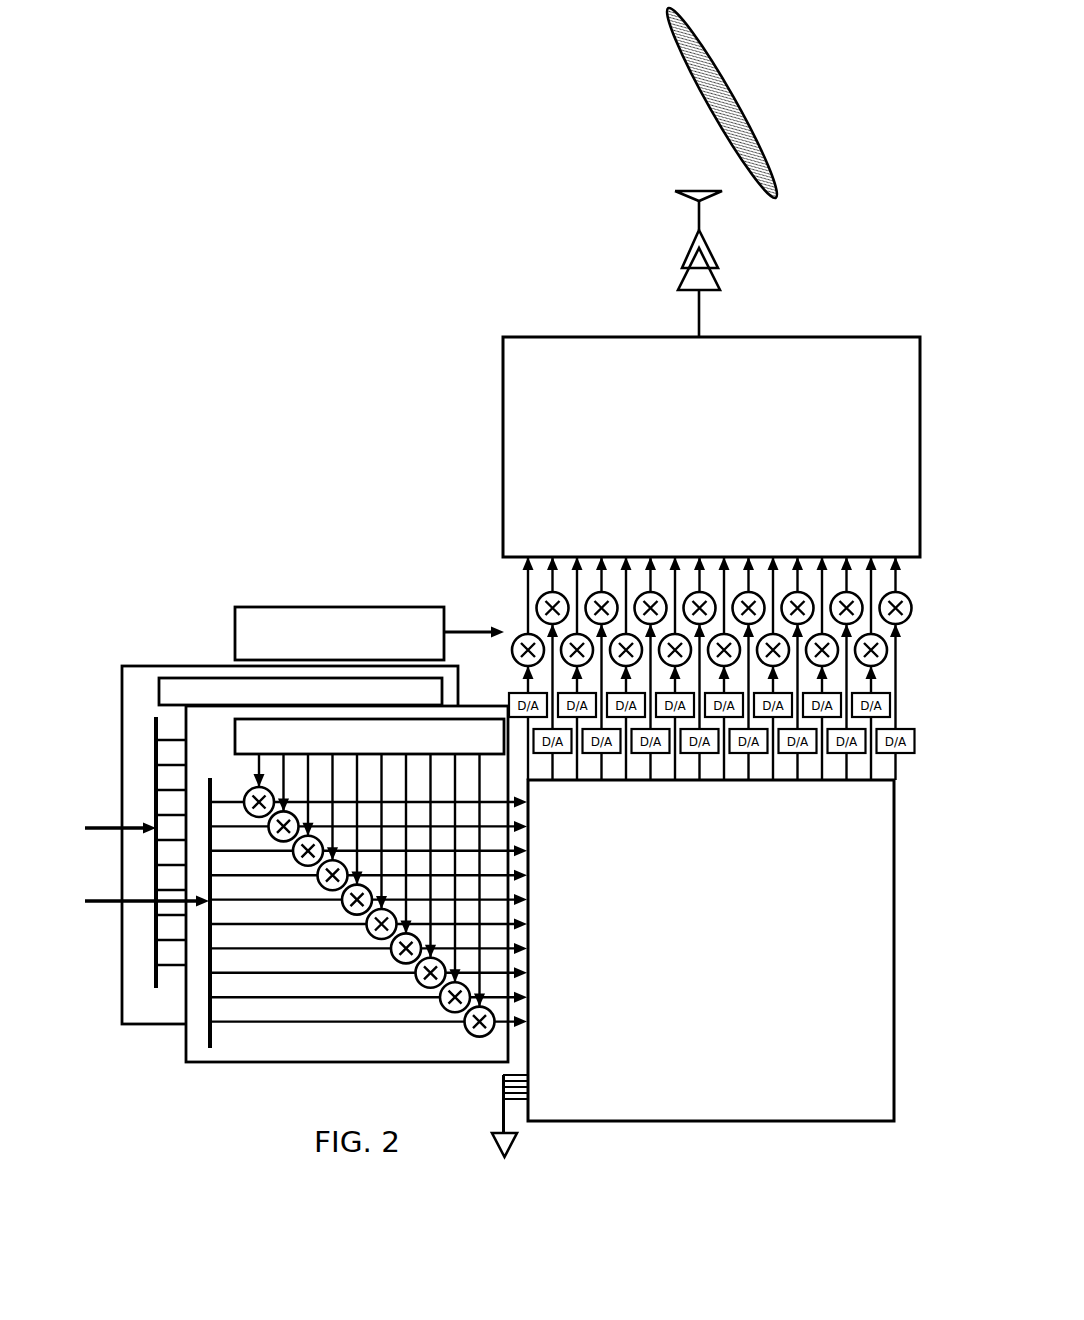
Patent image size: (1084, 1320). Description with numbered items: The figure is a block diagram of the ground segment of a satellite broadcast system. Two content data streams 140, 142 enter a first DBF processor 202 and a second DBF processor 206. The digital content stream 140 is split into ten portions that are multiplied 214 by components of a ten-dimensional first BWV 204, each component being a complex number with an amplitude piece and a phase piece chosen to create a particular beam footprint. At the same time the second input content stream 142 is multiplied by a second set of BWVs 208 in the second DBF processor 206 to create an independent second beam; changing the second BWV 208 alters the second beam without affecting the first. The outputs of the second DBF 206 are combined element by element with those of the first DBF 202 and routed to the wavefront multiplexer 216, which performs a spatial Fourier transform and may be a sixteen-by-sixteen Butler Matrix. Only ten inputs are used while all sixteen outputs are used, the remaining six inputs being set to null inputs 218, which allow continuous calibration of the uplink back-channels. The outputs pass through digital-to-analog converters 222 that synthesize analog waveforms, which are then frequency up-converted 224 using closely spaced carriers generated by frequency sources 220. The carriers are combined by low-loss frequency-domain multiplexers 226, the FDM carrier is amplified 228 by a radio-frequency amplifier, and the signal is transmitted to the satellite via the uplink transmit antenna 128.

The uplink transmit antenna 128 is at (694, 103).
The amplifier 228 is at (662, 264).
The frequency-domain multiplexer 226 is at (711, 447).
The frequency up-converters 224 is at (683, 610).
The digital-to-analog converters 222 is at (688, 699).
The frequency sources 220 is at (369, 596).
The second DBF processor 206 is at (283, 820).
The second set of BWVs 208 is at (300, 692).
The first BWV 204 is at (369, 736).
The first DBF processor 202 is at (320, 908).
The multipliers 214 is at (368, 907).
The wavefront multiplexer 216 is at (711, 950).
The null inputs 218 is at (462, 1116).
The second content data stream 142 is at (116, 852).
The first content data stream 140 is at (142, 937).